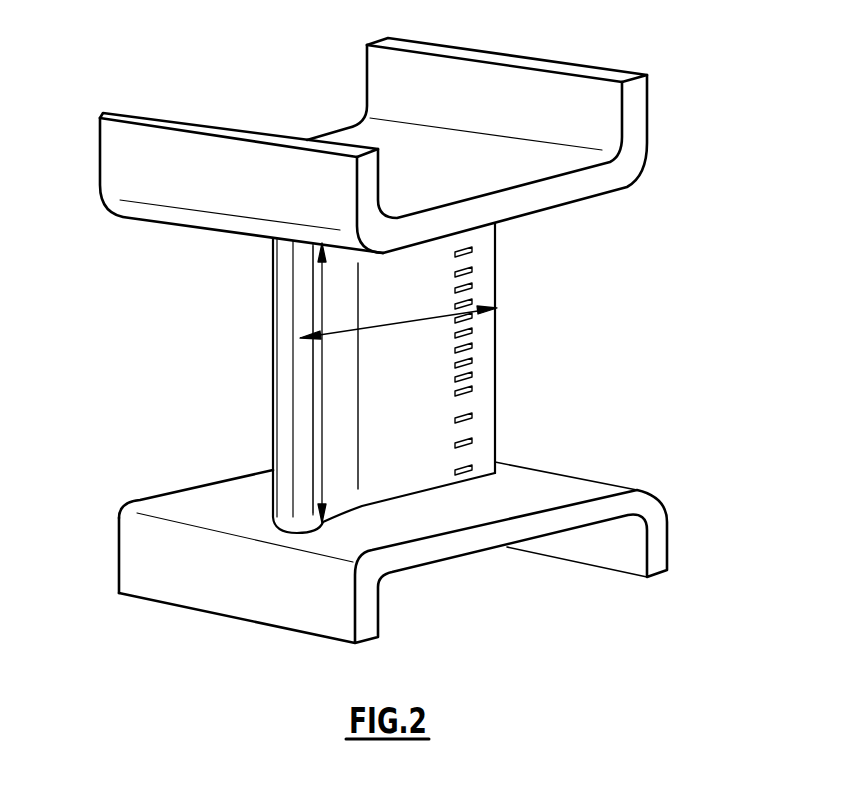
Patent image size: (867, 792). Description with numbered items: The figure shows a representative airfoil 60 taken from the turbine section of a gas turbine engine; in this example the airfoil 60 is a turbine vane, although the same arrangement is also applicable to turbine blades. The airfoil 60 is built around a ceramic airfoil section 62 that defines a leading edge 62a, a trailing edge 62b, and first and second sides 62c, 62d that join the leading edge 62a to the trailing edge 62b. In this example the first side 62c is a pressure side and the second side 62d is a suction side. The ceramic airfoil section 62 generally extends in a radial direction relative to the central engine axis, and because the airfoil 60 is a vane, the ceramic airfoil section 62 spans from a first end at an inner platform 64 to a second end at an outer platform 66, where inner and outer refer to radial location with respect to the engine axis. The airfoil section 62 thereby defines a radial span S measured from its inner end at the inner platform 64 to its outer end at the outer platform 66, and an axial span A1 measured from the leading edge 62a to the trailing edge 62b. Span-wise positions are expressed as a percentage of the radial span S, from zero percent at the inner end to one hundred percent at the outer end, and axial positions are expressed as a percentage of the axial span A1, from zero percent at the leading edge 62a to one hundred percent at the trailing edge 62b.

The airfoil 60 is at (378, 340).
The ceramic airfoil section 62 is at (414, 371).
The leading edge 62a is at (290, 376).
The trailing edge 62b is at (560, 210).
The first side 62c is at (343, 295).
The second side 62d is at (273, 273).
The inner platform 64 is at (655, 515).
The outer platform 66 is at (632, 157).
The radial span S is at (322, 423).
The axial span A1 is at (388, 321).